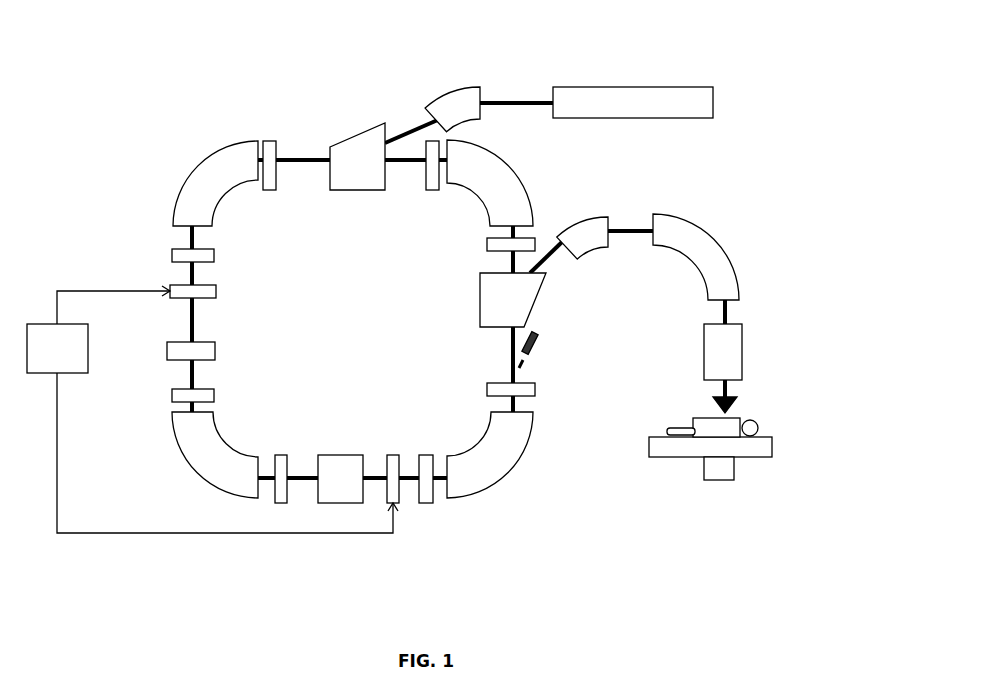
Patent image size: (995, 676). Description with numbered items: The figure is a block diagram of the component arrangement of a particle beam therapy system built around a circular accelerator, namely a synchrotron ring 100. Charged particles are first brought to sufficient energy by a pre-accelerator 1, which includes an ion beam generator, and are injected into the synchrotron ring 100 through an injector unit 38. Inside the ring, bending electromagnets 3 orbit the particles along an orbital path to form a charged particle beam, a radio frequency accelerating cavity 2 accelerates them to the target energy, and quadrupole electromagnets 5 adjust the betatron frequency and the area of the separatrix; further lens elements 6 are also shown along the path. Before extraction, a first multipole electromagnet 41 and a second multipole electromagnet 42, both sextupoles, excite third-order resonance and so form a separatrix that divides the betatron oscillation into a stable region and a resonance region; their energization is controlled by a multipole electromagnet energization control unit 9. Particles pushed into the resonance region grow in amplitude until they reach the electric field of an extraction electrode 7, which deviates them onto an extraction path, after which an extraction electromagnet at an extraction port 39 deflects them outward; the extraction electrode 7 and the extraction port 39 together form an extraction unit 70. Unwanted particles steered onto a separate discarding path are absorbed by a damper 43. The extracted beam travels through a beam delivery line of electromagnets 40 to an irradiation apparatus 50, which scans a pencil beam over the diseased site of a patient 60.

The synchrotron ring 100 is at (280, 43).
The pre-accelerator 1 is at (620, 108).
The radio frequency accelerating cavity 2 is at (216, 352).
The bending electromagnet 3 is at (210, 190).
The quadrupole electromagnet 5 is at (432, 180).
The quadrupole magnet (defocusing) 6 is at (273, 155).
The extraction electrode 7 is at (360, 453).
The multipole electromagnet energization control unit 9 is at (50, 323).
The injector unit 38 is at (355, 158).
The extraction port 39 is at (478, 310).
The electromagnet 40 is at (585, 223).
The first multipole electromagnet 41 is at (216, 291).
The second multipole electromagnet 42 is at (391, 453).
The damper 43 is at (540, 345).
The irradiation apparatus 50 is at (715, 345).
The patient 60 is at (738, 416).
The extraction unit 70 is at (386, 368).